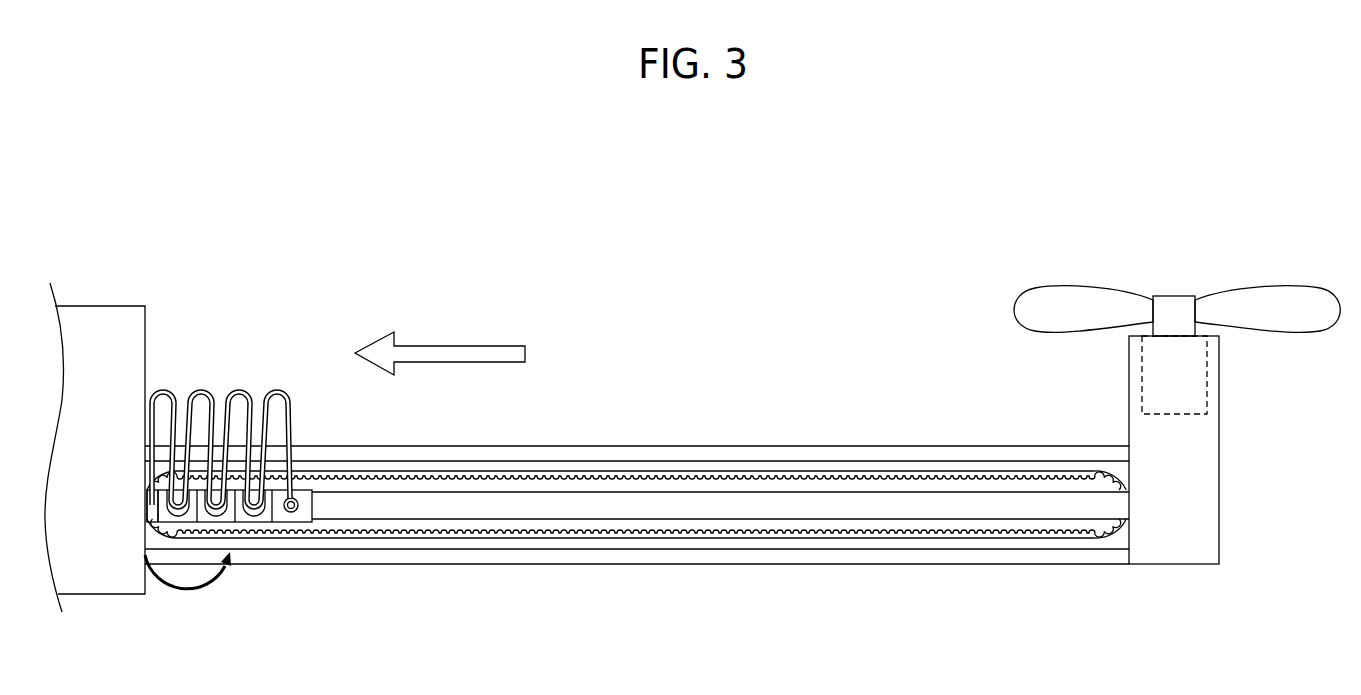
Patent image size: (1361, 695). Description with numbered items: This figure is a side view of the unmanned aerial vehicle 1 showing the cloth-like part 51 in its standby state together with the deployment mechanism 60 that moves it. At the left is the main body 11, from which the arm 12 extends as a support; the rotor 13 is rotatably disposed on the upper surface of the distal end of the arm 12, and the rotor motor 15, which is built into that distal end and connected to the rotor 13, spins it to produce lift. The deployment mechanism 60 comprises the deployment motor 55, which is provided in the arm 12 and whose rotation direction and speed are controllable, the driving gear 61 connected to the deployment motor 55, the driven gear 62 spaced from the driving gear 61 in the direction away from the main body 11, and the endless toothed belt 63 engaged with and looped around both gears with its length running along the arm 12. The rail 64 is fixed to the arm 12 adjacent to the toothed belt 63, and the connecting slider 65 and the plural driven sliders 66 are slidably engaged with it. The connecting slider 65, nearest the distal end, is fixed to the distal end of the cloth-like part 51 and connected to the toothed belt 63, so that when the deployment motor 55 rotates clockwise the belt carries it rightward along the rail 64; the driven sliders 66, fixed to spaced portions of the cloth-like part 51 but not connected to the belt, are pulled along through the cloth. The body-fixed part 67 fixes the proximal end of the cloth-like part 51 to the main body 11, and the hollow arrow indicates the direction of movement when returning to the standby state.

The unmanned aerial vehicle 1 is at (1162, 134).
The deployment mechanism 60 is at (871, 249).
The main body 11 is at (98, 306).
The arm 12 is at (840, 450).
The rotor 13 is at (1302, 290).
The rotor motor 15 is at (1208, 371).
The cloth-like part 51 is at (270, 392).
The deployment motor 55 is at (173, 542).
The driving gear 61 is at (188, 528).
The driven gear 62 is at (1098, 526).
The toothed belt 63 is at (973, 473).
The rail 64 is at (695, 505).
The connecting slider 65 is at (302, 517).
The driven sliders 66 is at (263, 517).
The body-fixed part 67 is at (150, 518).